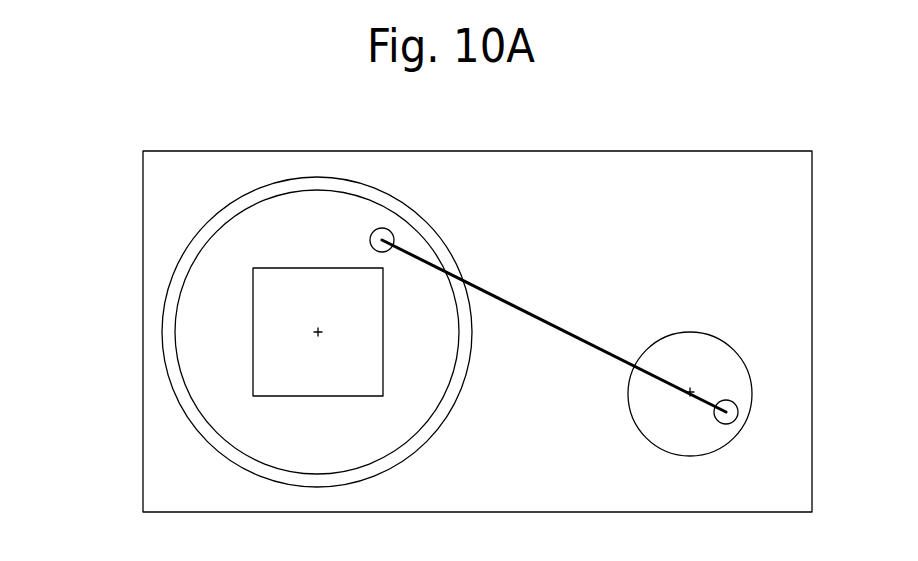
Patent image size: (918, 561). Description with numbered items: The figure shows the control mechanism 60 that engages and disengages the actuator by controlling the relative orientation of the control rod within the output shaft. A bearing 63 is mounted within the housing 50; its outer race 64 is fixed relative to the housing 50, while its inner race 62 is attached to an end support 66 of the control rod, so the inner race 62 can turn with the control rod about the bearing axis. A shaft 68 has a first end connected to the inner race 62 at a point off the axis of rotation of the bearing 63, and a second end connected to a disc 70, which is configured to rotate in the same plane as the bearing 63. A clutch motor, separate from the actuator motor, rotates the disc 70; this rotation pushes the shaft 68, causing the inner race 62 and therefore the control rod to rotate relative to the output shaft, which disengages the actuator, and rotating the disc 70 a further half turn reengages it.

The housing 50 is at (140, 468).
The control mechanism 60 is at (762, 125).
The inner race 62 is at (195, 310).
The bearing 63 is at (251, 332).
The outer race 64 is at (180, 263).
The end support 66 is at (270, 367).
The shaft 68 is at (580, 338).
The disc 70 is at (737, 373).